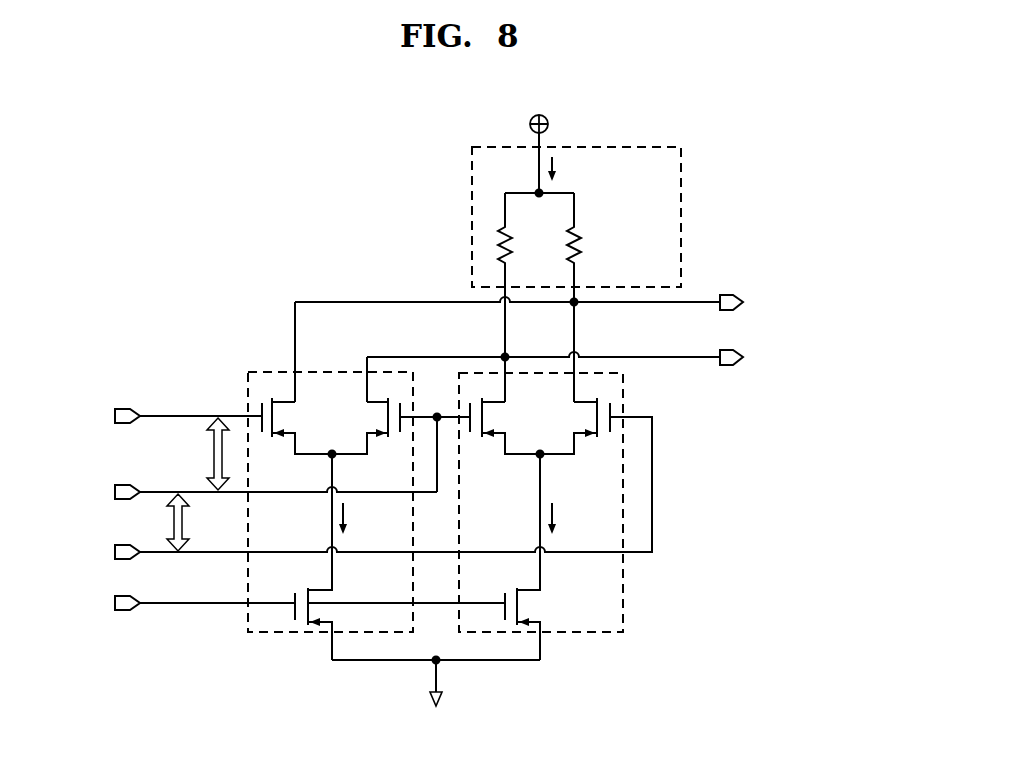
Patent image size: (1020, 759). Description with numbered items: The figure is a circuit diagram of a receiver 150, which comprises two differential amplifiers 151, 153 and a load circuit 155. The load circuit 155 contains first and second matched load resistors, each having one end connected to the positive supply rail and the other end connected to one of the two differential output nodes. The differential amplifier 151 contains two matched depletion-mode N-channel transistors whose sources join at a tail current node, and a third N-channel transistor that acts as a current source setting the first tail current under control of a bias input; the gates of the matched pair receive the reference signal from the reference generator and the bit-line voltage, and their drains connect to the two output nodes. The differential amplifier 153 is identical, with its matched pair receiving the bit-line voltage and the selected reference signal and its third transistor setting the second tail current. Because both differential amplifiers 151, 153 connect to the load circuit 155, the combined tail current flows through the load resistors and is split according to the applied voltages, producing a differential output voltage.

The receiver 150 is at (738, 137).
The differential amplifier 151 is at (290, 632).
The differential amplifier 153 is at (580, 632).
The load circuit 155 is at (681, 232).